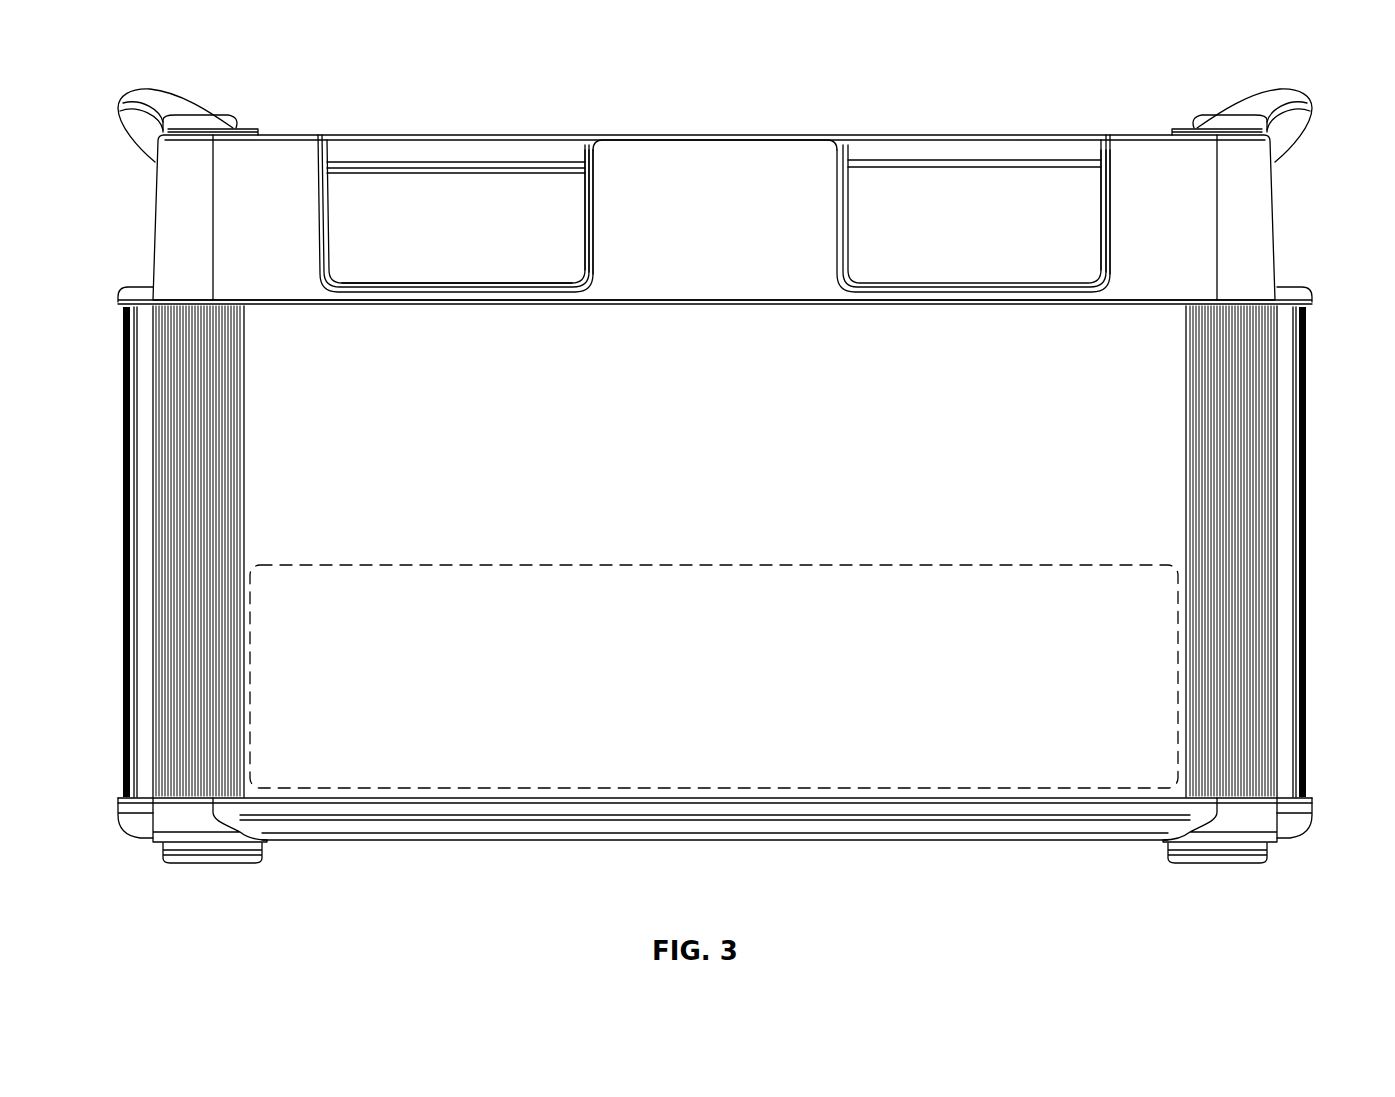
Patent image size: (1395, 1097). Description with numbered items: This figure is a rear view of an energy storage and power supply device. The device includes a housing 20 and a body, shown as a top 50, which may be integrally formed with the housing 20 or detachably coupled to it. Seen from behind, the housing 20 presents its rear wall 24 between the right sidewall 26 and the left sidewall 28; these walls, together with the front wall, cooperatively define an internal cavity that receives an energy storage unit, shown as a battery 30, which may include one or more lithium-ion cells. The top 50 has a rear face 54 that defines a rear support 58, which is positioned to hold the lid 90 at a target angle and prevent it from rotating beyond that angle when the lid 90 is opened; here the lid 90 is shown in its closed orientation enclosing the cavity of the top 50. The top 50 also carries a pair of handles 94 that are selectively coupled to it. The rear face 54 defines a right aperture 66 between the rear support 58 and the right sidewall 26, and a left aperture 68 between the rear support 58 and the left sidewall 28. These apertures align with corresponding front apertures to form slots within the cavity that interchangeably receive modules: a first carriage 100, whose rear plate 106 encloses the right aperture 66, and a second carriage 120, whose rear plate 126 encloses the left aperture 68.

The housing 20 is at (118, 718).
The rear wall 24 is at (597, 765).
The right sidewall 26 is at (118, 483).
The left sidewall 28 is at (1320, 512).
The battery 30 is at (1070, 790).
The top 50 is at (150, 212).
The rear face 54 is at (283, 160).
The rear support 58 is at (680, 190).
The right aperture 66 is at (595, 235).
The left aperture 68 is at (1108, 235).
The lid 90 is at (453, 153).
The handles 94 is at (157, 108).
The first carriage 100 is at (480, 197).
The rear plate 106 is at (390, 190).
The second carriage 120 is at (1016, 198).
The rear plate 126 is at (912, 185).